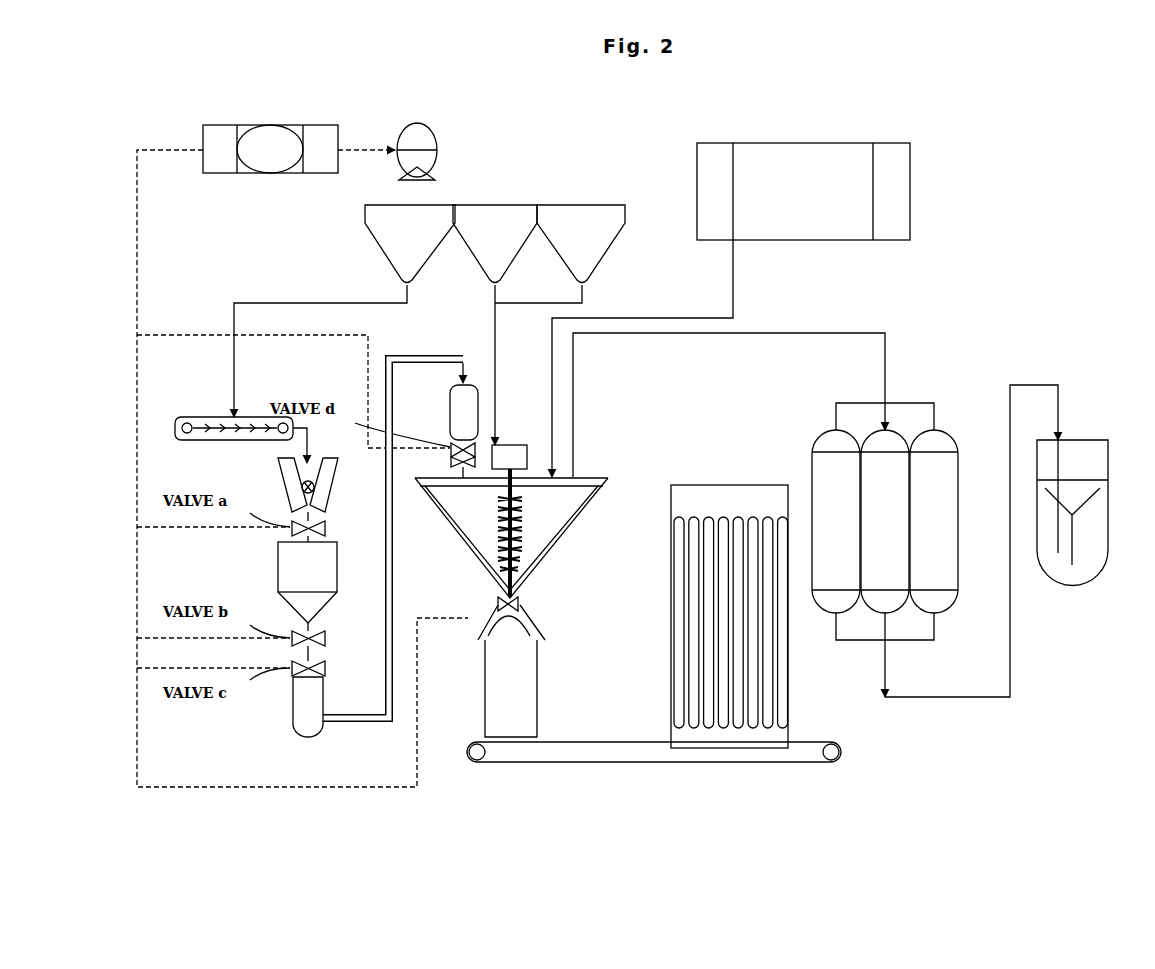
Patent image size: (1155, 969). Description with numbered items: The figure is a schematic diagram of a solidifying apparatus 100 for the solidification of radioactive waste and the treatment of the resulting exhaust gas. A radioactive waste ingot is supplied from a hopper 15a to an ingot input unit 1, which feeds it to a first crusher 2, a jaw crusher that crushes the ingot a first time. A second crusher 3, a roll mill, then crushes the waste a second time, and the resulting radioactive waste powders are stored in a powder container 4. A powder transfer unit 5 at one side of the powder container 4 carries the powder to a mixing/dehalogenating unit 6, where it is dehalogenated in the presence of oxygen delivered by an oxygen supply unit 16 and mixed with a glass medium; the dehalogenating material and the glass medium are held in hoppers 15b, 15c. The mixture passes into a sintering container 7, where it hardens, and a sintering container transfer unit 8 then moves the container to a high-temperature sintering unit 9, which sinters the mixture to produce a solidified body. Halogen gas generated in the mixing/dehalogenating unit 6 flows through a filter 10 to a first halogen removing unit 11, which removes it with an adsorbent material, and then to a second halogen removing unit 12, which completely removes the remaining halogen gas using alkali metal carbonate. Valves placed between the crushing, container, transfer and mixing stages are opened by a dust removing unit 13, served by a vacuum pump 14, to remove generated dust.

The ingot input unit 1 is at (241, 428).
The first crusher 2 is at (295, 497).
The second crusher 3 is at (291, 591).
The powder container 4 is at (291, 691).
The powder transfer unit 5 is at (400, 538).
The mixing/dehalogenating unit 6 is at (511, 521).
The sintering container 7 is at (511, 667).
The sintering container transfer unit 8 is at (654, 735).
The high-temperature sintering unit 9 is at (715, 616).
The filter 10 is at (729, 405).
The first halogen removing unit 11 is at (965, 430).
The second halogen removing unit 12 is at (1072, 532).
The dust removing unit 13 is at (270, 136).
The vacuum pump 14 is at (417, 139).
The hopper 15a is at (344, 311).
The hopper 15b is at (495, 325).
The hopper 15c is at (560, 254).
The oxygen supply unit 16 is at (731, 297).
The solidifying apparatus 100 is at (1040, 752).